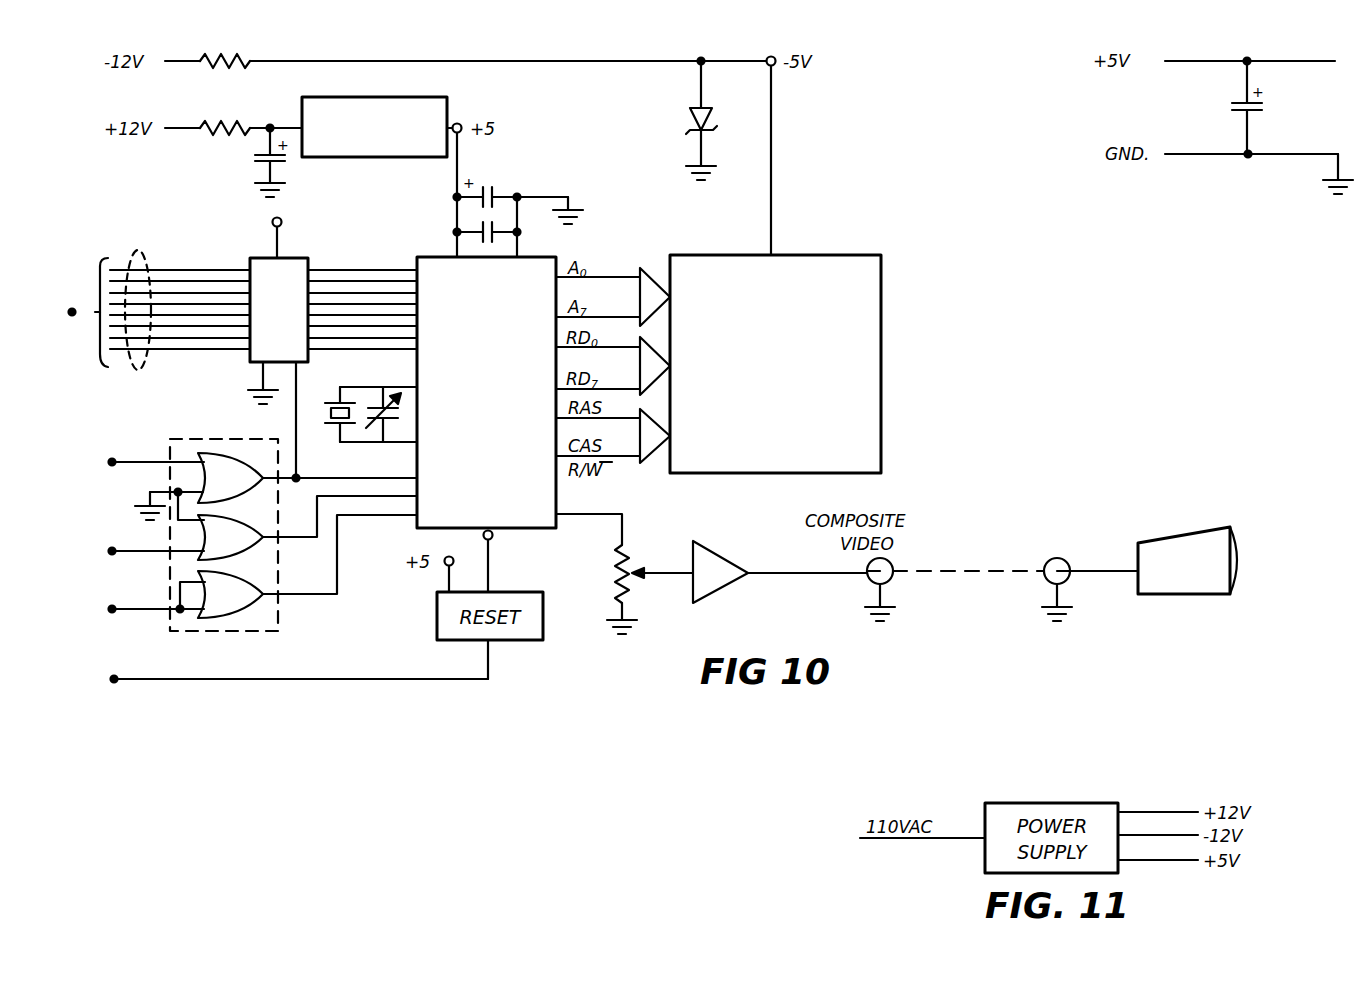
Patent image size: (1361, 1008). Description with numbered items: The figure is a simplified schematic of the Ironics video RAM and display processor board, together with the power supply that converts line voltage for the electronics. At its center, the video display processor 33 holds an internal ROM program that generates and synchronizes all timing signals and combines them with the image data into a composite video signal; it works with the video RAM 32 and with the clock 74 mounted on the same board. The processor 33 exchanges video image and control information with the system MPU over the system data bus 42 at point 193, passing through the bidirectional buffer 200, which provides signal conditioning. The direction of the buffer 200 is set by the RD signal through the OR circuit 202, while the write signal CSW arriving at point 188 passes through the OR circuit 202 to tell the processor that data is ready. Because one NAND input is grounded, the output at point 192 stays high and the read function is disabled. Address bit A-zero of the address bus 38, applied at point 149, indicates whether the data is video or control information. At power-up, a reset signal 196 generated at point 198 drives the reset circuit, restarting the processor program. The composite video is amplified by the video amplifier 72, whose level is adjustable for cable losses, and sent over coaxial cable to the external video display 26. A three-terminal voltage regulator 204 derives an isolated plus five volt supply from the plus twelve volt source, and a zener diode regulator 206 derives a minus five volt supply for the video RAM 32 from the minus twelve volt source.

The point 193 is at (72, 312).
The system data bus 42 is at (140, 258).
The bidirectional buffer 200 is at (302, 258).
The video display processor 33 is at (430, 257).
The video RAM 32 is at (846, 255).
The voltage regulator 204 is at (425, 97).
The zener diode 206 is at (688, 118).
The clock 74 is at (318, 414).
The point 192 is at (112, 462).
The point 188 is at (112, 551).
The point 149 is at (112, 609).
The address bus 38 is at (160, 609).
The OR circuit 202 is at (275, 631).
The point 198 is at (114, 679).
The reset signal 196 is at (205, 682).
The video amplifier 72 is at (720, 548).
The video display 26 is at (1197, 530).